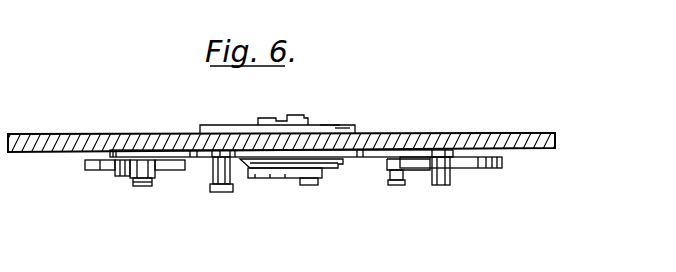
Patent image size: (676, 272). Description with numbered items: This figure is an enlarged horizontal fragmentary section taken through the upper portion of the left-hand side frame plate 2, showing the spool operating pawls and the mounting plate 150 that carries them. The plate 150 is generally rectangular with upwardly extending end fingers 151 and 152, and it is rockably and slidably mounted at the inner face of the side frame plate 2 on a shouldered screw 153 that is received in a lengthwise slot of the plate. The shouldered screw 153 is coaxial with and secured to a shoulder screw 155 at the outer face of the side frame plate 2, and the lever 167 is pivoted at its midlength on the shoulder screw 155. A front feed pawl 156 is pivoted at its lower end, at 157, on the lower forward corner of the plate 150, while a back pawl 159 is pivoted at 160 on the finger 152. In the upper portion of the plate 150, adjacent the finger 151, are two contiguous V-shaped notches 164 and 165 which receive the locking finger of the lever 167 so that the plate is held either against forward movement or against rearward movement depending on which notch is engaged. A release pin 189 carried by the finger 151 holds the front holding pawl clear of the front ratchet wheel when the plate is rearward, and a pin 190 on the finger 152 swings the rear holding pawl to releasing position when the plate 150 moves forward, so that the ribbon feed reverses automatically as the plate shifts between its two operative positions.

The side frame plate 2 is at (89, 133).
The plate 150 is at (265, 172).
The end finger 151 is at (158, 179).
The end finger 152 is at (413, 153).
The shouldered screw 153 is at (342, 127).
The shoulder screw 155 is at (300, 117).
The front feed pawl 156 is at (103, 171).
The pivot of front feed pawl 157 is at (178, 171).
The back pawl 159 is at (478, 169).
The pivot of back pawl 160 is at (415, 171).
The V-shaped notch 164 is at (192, 150).
The V-shaped notch 165 is at (229, 155).
The lever 167 is at (330, 124).
The release pin 189 is at (135, 187).
The pin 190 is at (441, 186).